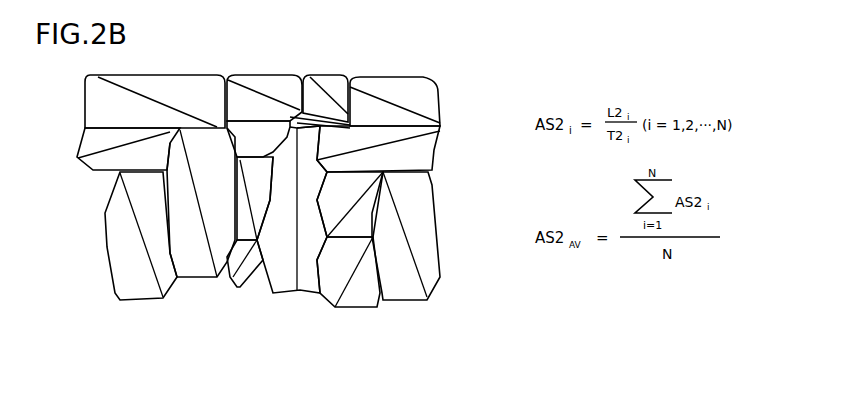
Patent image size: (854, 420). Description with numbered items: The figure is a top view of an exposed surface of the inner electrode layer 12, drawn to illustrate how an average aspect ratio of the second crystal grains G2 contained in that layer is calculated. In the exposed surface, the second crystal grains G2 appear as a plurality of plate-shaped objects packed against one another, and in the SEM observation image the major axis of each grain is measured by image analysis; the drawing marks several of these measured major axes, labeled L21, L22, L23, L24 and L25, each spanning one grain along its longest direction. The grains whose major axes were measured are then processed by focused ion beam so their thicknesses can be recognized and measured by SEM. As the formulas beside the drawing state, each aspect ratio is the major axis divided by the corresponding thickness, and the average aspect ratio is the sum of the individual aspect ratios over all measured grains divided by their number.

The inner electrode layer 12 is at (447, 97).
The second crystal grains G2 is at (402, 203).
The major axis L2_1 L21 is at (201, 202).
The major axis L2_2 L22 is at (292, 209).
The major axis L2_3 L23 is at (258, 139).
The major axis L2_4 L24 is at (255, 198).
The major axis L2_5 L25 is at (350, 204).